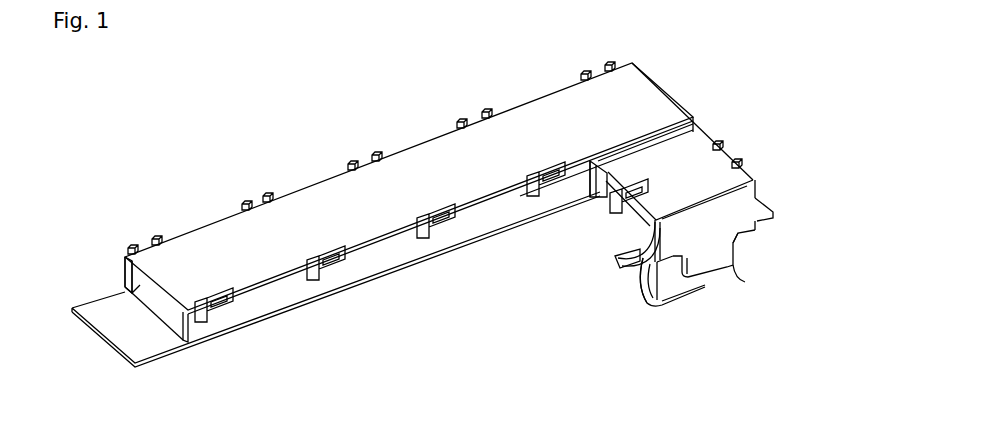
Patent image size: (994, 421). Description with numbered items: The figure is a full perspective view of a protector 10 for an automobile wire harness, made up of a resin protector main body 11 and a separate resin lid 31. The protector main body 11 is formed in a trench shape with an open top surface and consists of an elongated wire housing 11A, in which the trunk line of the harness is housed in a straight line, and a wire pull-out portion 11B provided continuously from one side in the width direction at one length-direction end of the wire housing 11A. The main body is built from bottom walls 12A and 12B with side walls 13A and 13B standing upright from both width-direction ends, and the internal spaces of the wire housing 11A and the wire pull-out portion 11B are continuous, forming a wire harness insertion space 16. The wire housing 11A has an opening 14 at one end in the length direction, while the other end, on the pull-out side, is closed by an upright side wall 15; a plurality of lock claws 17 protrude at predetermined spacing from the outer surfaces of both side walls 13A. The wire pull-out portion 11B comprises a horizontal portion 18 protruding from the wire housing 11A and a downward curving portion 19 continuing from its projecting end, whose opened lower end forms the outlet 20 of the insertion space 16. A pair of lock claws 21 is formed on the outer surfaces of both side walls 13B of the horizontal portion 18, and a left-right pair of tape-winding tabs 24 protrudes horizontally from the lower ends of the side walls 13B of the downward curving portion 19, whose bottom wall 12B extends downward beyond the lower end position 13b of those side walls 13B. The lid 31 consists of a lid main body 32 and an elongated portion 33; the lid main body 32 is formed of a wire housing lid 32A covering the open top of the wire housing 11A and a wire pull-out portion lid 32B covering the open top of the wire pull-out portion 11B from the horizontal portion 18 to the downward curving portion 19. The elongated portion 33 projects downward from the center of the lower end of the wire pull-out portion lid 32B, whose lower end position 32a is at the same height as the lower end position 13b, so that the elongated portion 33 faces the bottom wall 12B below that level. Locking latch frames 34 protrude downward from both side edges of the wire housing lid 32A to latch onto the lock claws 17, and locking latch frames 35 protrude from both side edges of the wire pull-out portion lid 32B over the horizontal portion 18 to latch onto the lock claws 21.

The protector 10 is at (302, 138).
The protector main body 11 is at (551, 361).
The wire housing 11A is at (310, 302).
The wire pull-out portion 11B is at (574, 334).
The bottom wall 12A is at (173, 318).
The bottom wall 12B is at (700, 288).
The side wall 13A is at (120, 270).
The side wall 13B is at (594, 202).
The lower end position 13b is at (643, 262).
The opening 14 is at (122, 285).
The side wall 15 is at (643, 82).
The wire harness insertion space 16 is at (107, 323).
The lock claw 17 is at (228, 316).
The horizontal portion 18 is at (620, 220).
The downward curving portion 19 is at (630, 237).
The outlet 20 is at (672, 266).
The lock claw 21 is at (612, 212).
The tape-winding tab 24 is at (617, 262).
The lid 31 is at (792, 30).
The lid main body 32 is at (740, 32).
The wire housing lid 32A is at (645, 97).
The wire pull-out portion lid 32B is at (693, 157).
The lower end position 32a is at (742, 235).
The elongated portion 33 is at (745, 282).
The locking latch frame 34 is at (155, 240).
The locking latch frame 35 is at (605, 207).